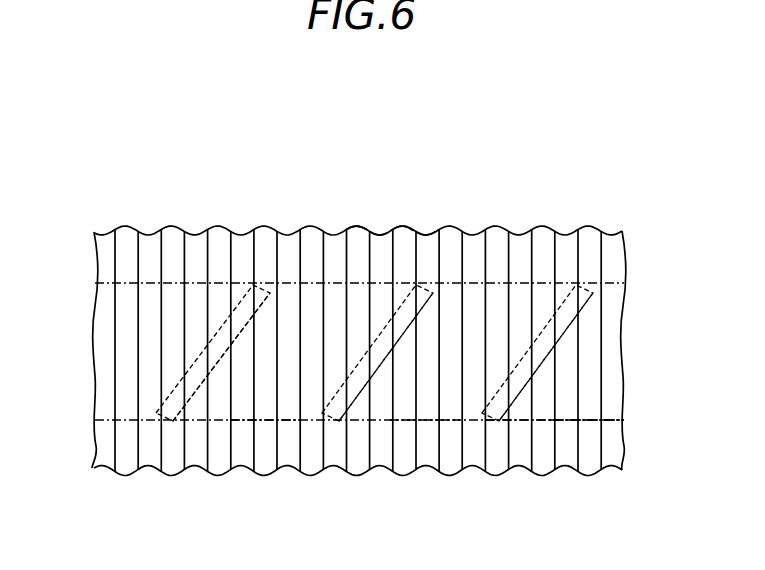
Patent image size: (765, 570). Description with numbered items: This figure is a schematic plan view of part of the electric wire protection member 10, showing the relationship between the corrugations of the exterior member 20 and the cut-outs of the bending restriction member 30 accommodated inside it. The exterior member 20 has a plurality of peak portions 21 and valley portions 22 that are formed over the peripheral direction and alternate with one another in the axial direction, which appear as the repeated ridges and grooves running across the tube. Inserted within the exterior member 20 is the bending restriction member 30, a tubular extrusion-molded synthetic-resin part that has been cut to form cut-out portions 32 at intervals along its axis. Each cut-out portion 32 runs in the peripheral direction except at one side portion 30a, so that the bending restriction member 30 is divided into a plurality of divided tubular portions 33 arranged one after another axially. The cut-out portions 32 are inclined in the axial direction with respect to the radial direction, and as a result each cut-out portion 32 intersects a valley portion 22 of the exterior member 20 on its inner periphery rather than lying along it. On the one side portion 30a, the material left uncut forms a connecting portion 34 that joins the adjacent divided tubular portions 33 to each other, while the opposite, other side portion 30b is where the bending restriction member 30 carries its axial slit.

The heat exchanger core / corrugated fin assembly 10 is at (511, 169).
The exterior member 20 is at (541, 224).
The peak portion 21 is at (356, 228).
The valley portion 22 is at (380, 233).
The bending restriction member 30 is at (560, 426).
The one side portion 30a is at (172, 283).
The other side portion 30b is at (122, 425).
The cut-out portion 32 is at (219, 373).
The divided tubular portion 33 is at (268, 423).
The connecting portion 34 is at (270, 293).